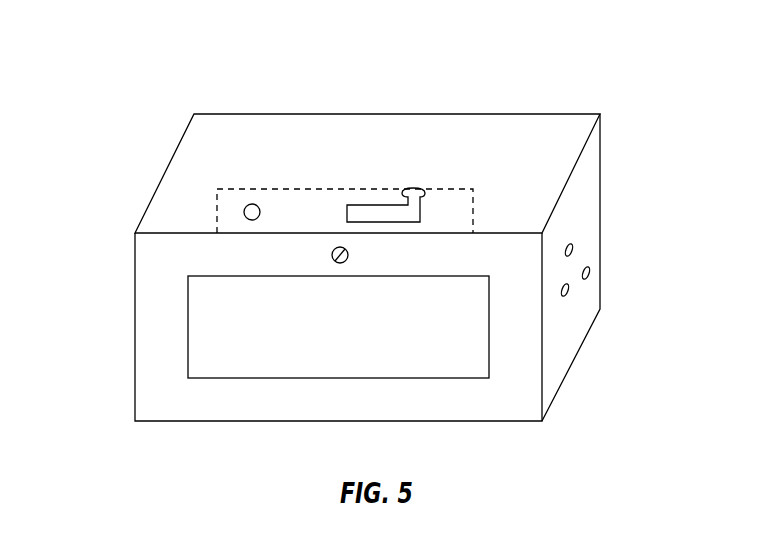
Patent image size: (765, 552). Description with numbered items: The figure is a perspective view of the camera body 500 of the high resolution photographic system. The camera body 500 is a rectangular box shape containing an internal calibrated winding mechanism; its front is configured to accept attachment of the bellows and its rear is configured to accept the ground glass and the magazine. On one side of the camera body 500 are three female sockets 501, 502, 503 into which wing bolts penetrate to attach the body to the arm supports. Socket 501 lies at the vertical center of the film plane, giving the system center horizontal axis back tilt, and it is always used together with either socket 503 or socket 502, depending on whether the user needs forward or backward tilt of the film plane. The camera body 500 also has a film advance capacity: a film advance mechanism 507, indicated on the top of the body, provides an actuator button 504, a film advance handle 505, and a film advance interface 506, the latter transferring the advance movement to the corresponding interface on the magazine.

The camera body 500 is at (124, 36).
The female socket 501 is at (572, 246).
The female socket 502 is at (588, 270).
The female socket 503 is at (568, 288).
The actuator button 504 is at (252, 204).
The film advance handle 505 is at (418, 188).
The film advance interface 506 is at (342, 263).
The film advance mechanism 507 is at (326, 177).